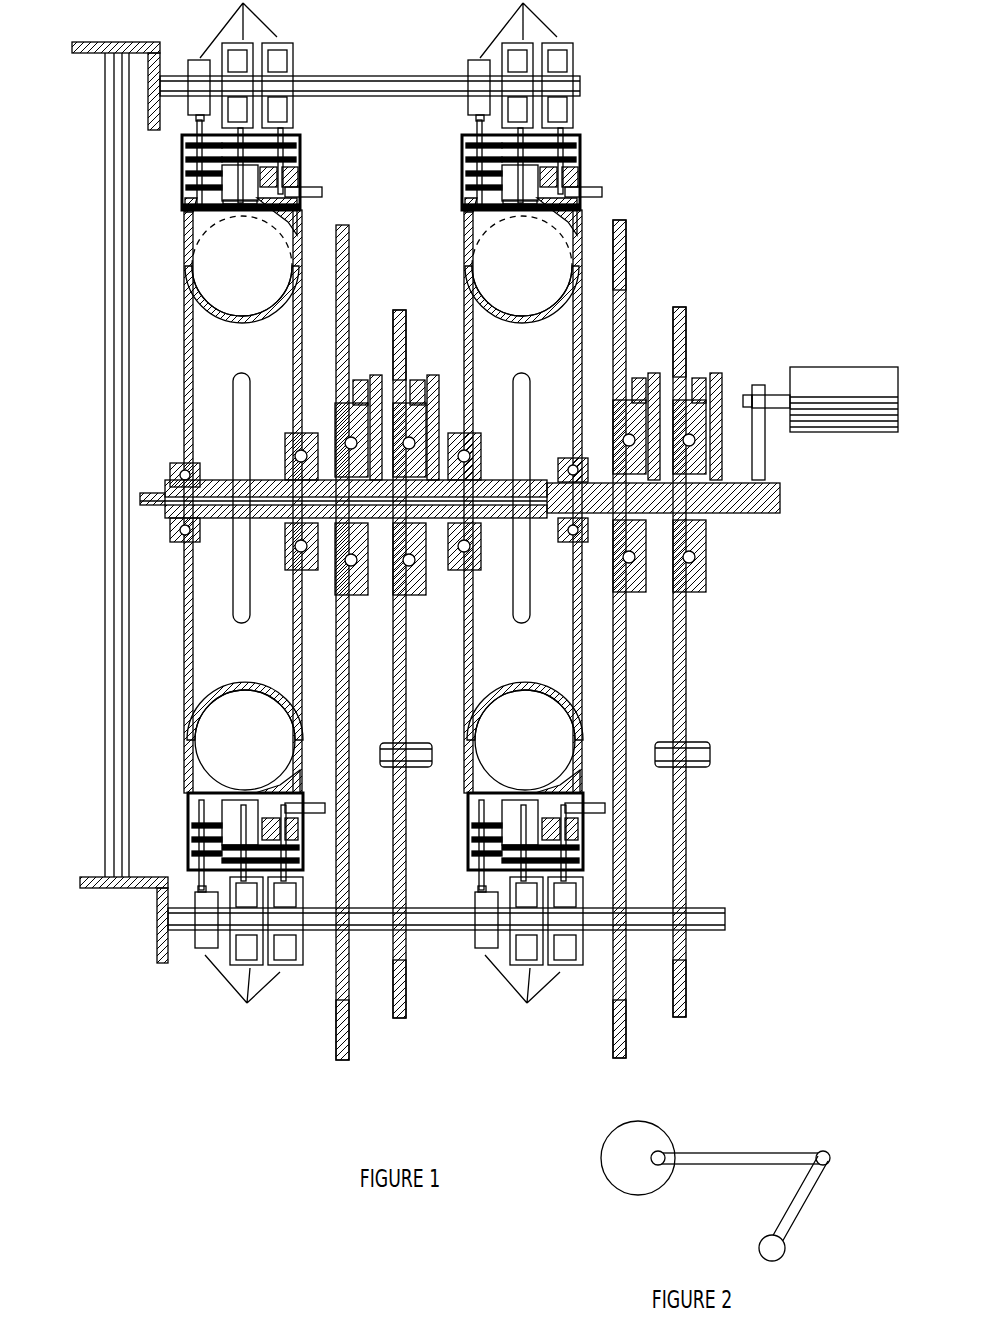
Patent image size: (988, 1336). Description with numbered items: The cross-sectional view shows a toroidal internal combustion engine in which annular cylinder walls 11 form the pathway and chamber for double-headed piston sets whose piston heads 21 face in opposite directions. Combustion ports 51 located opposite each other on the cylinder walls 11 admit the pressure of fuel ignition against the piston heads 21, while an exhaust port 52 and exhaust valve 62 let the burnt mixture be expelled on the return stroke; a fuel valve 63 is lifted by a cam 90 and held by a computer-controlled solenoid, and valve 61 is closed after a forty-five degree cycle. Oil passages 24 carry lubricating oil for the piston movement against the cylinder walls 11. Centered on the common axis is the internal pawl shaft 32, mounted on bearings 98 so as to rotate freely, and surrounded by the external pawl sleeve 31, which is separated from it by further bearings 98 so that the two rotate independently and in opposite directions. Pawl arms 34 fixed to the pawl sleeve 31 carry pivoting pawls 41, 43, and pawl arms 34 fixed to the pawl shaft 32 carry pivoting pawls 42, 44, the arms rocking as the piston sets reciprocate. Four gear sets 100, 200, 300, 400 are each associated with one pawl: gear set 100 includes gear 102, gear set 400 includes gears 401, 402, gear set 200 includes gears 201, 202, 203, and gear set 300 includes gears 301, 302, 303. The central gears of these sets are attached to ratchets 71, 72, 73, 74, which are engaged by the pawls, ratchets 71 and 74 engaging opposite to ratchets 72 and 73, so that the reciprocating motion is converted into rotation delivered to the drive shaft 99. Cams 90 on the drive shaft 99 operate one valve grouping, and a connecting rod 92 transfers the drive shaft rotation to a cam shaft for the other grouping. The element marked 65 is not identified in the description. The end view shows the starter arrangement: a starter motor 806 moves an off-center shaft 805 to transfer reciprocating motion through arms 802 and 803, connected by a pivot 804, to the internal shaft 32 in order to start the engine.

In FIG. 1, the cylinder walls 11 is at (381, 501).
In FIG. 1, the piston heads 21 is at (382, 266).
In FIG. 1, the oil passages 24 is at (155, 462).
In FIG. 1, the external pawl sleeve 31 is at (382, 498).
In FIG. 1, the internal pawl shaft 32 is at (497, 484).
In FIG. 2, the internal pawl shaft 32 is at (811, 1259).
In FIG. 1, the pawl arms 34 is at (550, 396).
In FIG. 1, the pivoting pawl 41 is at (365, 337).
In FIG. 1, the pivoting pawl 42 is at (718, 354).
In FIG. 1, the pivoting pawl 43 is at (424, 359).
In FIG. 1, the pivoting pawl 44 is at (644, 345).
In FIG. 1, the combustion ports 51 is at (343, 524).
In FIG. 1, the exhaust port 52 is at (364, 495).
In FIG. 1, the valve 61 is at (388, 475).
In FIG. 1, the exhaust valve 62 is at (359, 474).
In FIG. 1, the fuel valve 63 is at (396, 841).
In FIG. 1, the port 65 is at (447, 153).
In FIG. 1, the ratchet 71 is at (358, 524).
In FIG. 1, the ratchet 72 is at (709, 521).
In FIG. 1, the ratchet 73 is at (417, 524).
In FIG. 1, the ratchet 74 is at (639, 521).
In FIG. 1, the cam 90 is at (389, 961).
In FIG. 1, the connecting rod 92 is at (120, 502).
In FIG. 1, the bearings 98 is at (361, 535).
In FIG. 1, the drive shaft 99 is at (482, 923).
In FIG. 1, the gear set 100 is at (360, 612).
In FIG. 1, the circular gear 102 is at (376, 1030).
In FIG. 1, the gear set 200 is at (716, 315).
In FIG. 1, the circular gear 201 is at (718, 648).
In FIG. 1, the circular gear 202 is at (715, 775).
In FIG. 1, the circular gear 203 is at (719, 989).
In FIG. 1, the gear set 300 is at (414, 315).
In FIG. 1, the circular gear 301 is at (423, 650).
In FIG. 1, the circular gear 302 is at (417, 787).
In FIG. 1, the circular gear 303 is at (426, 989).
In FIG. 1, the gear set 400 is at (653, 221).
In FIG. 1, the circular gear 401 is at (653, 621).
In FIG. 1, the circular gear 402 is at (649, 1029).
In FIG. 2, the arm 802 is at (740, 1121).
In FIG. 2, the arm 803 is at (825, 1203).
In FIG. 2, the pivot 804 is at (856, 1130).
In FIG. 2, the off-center shaft 805 is at (660, 1200).
In FIG. 1, the starter motor 806 is at (820, 397).
In FIG. 2, the starter motor 806 is at (649, 1134).